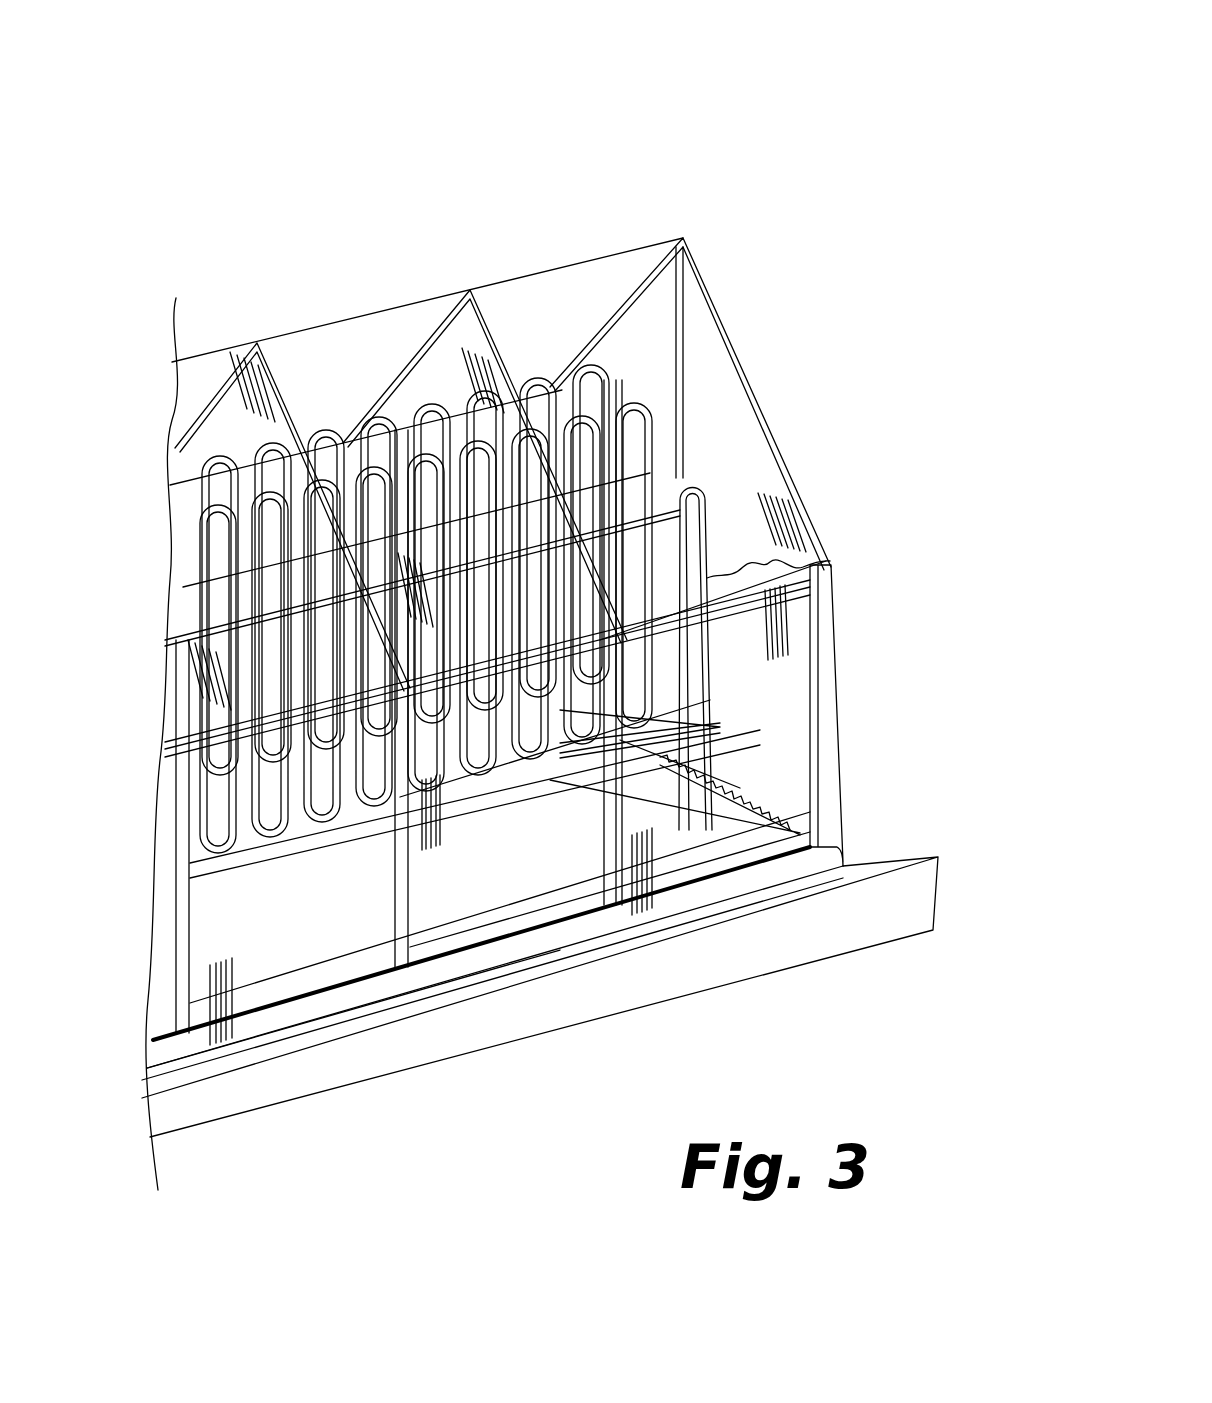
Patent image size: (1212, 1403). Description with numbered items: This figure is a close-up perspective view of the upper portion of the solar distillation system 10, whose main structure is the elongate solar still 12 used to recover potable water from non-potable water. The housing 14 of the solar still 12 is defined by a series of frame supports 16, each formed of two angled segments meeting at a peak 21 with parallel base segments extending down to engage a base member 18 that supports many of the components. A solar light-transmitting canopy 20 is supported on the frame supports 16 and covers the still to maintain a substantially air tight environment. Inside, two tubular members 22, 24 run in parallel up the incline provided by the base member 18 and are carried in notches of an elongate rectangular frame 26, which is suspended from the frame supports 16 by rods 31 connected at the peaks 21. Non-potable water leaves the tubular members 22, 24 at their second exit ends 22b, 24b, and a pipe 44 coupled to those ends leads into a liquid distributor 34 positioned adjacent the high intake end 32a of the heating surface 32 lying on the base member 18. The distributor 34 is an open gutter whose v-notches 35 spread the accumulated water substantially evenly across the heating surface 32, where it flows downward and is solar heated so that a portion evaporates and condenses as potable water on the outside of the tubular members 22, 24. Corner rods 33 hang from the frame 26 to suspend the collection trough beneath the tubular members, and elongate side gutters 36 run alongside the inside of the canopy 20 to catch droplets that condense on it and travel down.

The solar distillation system 10 is at (768, 125).
The solar still 12 is at (795, 210).
The housing 14 is at (791, 322).
The frame supports 16 is at (398, 367).
The base member 18 is at (938, 905).
The canopy 20 is at (843, 740).
The peak 21 is at (683, 236).
The tubular member 22 is at (538, 378).
The second exit end 22b is at (613, 407).
The tubular member 24 is at (560, 375).
The second exit end 24b is at (680, 477).
The frame 26 is at (707, 498).
The rods 31 is at (683, 345).
The heating surface 32 is at (562, 870).
The high intake end 32a is at (737, 787).
The corner rods 33 is at (565, 684).
The liquid distributor 34 is at (817, 773).
The v-notches 35 is at (803, 812).
The side gutters 36 is at (935, 858).
The pipe 44 is at (826, 561).